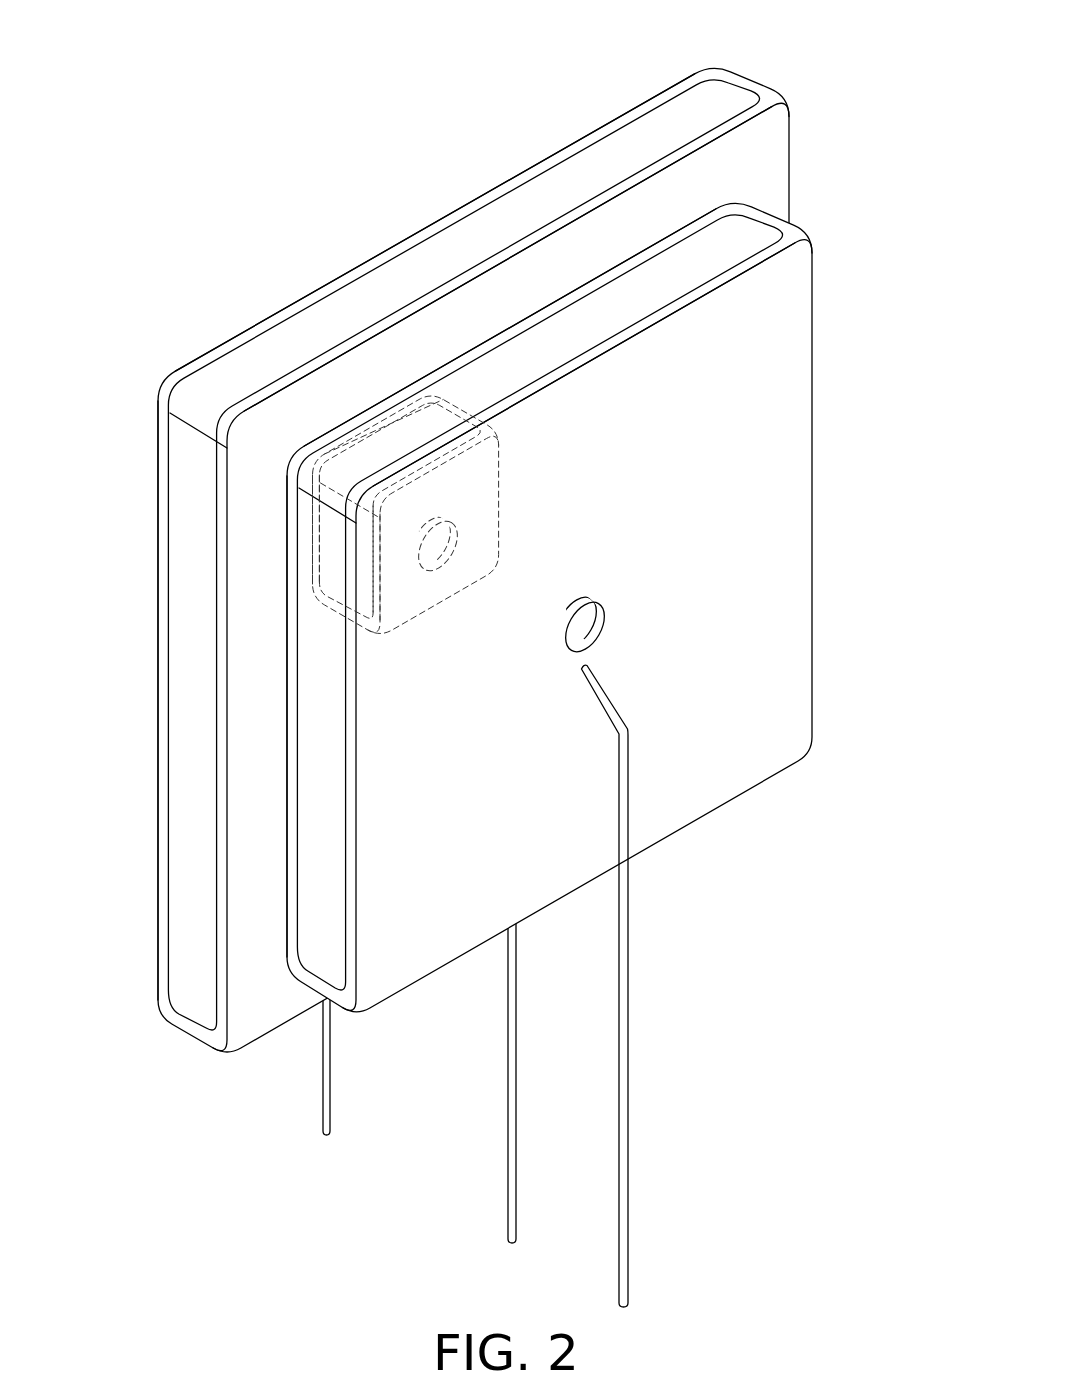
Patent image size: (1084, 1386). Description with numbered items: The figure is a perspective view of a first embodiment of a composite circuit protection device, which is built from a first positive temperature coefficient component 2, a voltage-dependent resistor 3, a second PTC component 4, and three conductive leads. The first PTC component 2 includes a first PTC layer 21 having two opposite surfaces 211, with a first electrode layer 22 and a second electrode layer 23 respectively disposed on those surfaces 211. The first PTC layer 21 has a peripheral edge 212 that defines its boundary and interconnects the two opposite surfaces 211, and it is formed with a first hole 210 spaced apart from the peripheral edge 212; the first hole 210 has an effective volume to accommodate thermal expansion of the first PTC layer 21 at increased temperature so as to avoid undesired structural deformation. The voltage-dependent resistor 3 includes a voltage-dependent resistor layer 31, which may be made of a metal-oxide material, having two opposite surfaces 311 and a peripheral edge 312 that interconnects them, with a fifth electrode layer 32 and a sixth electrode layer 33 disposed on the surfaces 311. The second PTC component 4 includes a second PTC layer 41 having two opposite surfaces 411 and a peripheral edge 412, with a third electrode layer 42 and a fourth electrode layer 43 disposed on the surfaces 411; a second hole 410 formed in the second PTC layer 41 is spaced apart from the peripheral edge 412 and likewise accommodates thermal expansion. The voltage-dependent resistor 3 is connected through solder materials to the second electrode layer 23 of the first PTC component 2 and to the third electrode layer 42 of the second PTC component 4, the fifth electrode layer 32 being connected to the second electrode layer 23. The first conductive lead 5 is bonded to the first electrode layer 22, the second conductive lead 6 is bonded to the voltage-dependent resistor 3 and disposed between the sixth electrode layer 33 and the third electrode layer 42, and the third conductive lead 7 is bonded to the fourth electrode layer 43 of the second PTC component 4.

The first positive temperature coefficient (PTC) component 2 is at (347, 442).
The first PTC layer 21 is at (382, 453).
The first electrode layer 22 is at (397, 428).
The second electrode layer 23 is at (425, 475).
The first hole 210 is at (450, 547).
The two opposite surfaces 211 is at (367, 587).
The peripheral edge 212 is at (335, 535).
The voltage-dependent resistor 3 is at (752, 163).
The voltage-dependent resistor layer 31 is at (740, 112).
The two opposite surfaces 311 is at (720, 103).
The peripheral edge 312 is at (193, 700).
The fifth electrode layer 32 is at (650, 103).
The sixth electrode layer 33 is at (707, 137).
The second PTC component 4 is at (768, 358).
The second PTC layer 41 is at (740, 237).
The two opposite surfaces 411 is at (670, 249).
The peripheral edge 412 is at (322, 778).
The third electrode layer 42 is at (707, 220).
The fourth electrode layer 43 is at (762, 256).
The second hole 410 is at (593, 630).
The first conductive lead 5 is at (328, 1090).
The second conductive lead 6 is at (512, 1170).
The third conductive lead 7 is at (623, 1197).